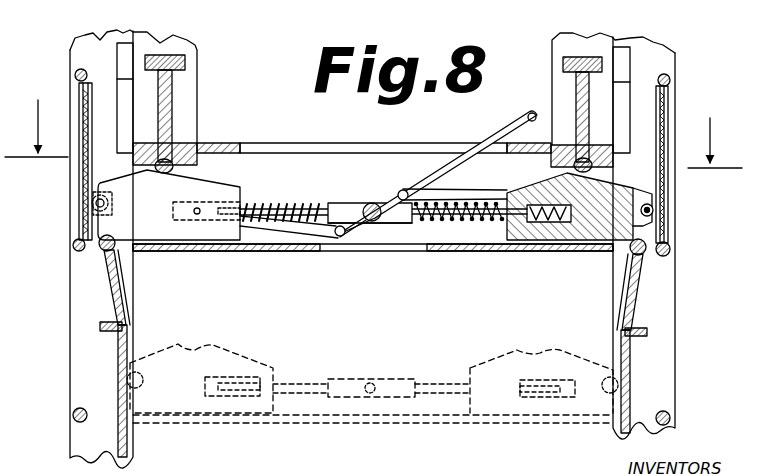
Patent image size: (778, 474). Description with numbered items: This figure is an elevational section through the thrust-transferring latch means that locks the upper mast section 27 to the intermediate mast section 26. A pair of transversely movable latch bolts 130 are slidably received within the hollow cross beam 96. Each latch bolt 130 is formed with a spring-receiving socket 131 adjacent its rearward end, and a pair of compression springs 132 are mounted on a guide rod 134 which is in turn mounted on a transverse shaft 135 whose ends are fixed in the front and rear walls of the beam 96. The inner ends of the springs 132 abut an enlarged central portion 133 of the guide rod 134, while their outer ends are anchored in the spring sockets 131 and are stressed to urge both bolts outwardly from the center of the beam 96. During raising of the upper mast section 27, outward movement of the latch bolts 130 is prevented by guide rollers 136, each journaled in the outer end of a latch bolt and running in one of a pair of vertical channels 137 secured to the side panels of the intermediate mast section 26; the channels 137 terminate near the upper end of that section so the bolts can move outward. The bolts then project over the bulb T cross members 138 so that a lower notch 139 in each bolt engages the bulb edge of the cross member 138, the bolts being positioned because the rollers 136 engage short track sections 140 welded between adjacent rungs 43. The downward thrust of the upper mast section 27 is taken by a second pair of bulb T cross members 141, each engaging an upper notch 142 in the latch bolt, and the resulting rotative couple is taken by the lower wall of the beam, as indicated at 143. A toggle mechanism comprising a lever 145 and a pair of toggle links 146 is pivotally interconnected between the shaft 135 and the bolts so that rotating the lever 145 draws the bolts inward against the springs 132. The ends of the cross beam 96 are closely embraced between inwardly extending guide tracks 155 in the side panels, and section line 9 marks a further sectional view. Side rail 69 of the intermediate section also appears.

The section line 9- 9 is at (373, 134).
The intermediate mast section 26 is at (678, 281).
The upper mast section 27 is at (199, 83).
The rungs 43 is at (83, 71).
The side rail 69 is at (77, 350).
The hollow cross beam 96 is at (400, 146).
The latch bolts 130 is at (210, 185).
The spring-receiving socket 131 is at (247, 203).
The compression springs 132 is at (292, 203).
The enlarged central portion 133 is at (393, 216).
The guide rod 134 is at (347, 202).
The transverse shaft 135 is at (373, 222).
The guide rollers 136 is at (93, 203).
The vertical channels 137 is at (124, 332).
The bulb T cross members 138 is at (108, 284).
The lower notch 139 is at (112, 238).
The short track sections 140 is at (100, 103).
The bulb T cross members 141 is at (172, 118).
The upper notch 142 is at (167, 171).
The lower wall of the hollow beam 143 is at (233, 253).
The lever 145 is at (493, 137).
The toggle links 146 is at (473, 203).
The guide tracks 155 is at (122, 85).